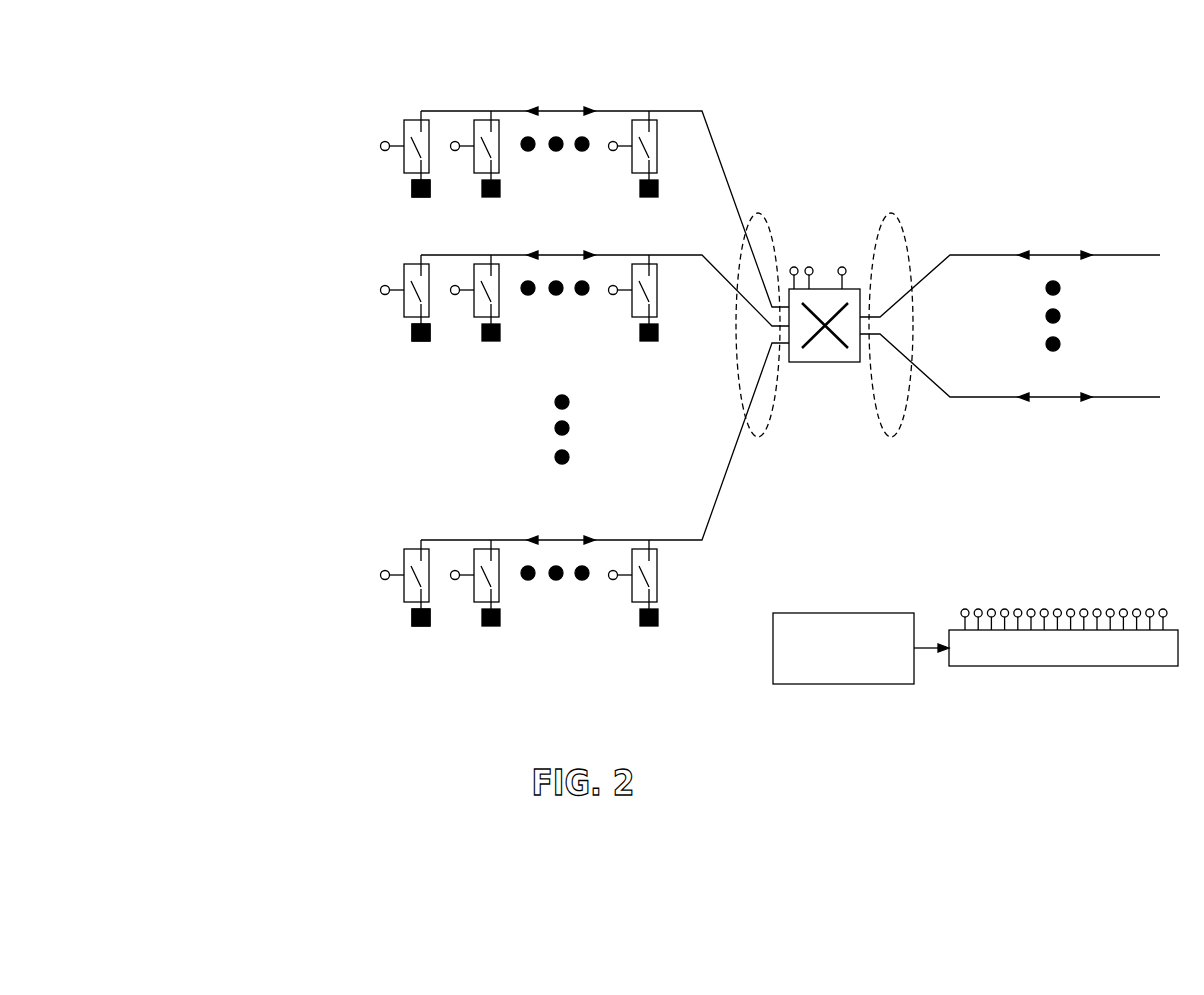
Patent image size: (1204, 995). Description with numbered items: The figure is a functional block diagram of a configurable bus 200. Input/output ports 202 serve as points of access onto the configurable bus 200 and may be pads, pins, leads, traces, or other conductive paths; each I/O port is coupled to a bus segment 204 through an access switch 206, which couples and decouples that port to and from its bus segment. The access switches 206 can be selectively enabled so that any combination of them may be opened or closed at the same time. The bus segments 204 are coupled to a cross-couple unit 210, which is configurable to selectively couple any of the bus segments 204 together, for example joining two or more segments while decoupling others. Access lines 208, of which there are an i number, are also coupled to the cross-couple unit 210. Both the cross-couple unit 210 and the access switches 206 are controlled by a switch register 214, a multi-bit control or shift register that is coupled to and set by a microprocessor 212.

The configurable bus 200 is at (1022, 110).
The input/output (I/O) ports 202 is at (420, 372).
The bus segments 204 is at (758, 432).
The access switches 206 is at (404, 550).
The access lines 208 is at (887, 432).
The cross-couple unit 210 is at (855, 288).
The microprocessor 212 is at (861, 648).
The switch register 214 is at (1063, 624).